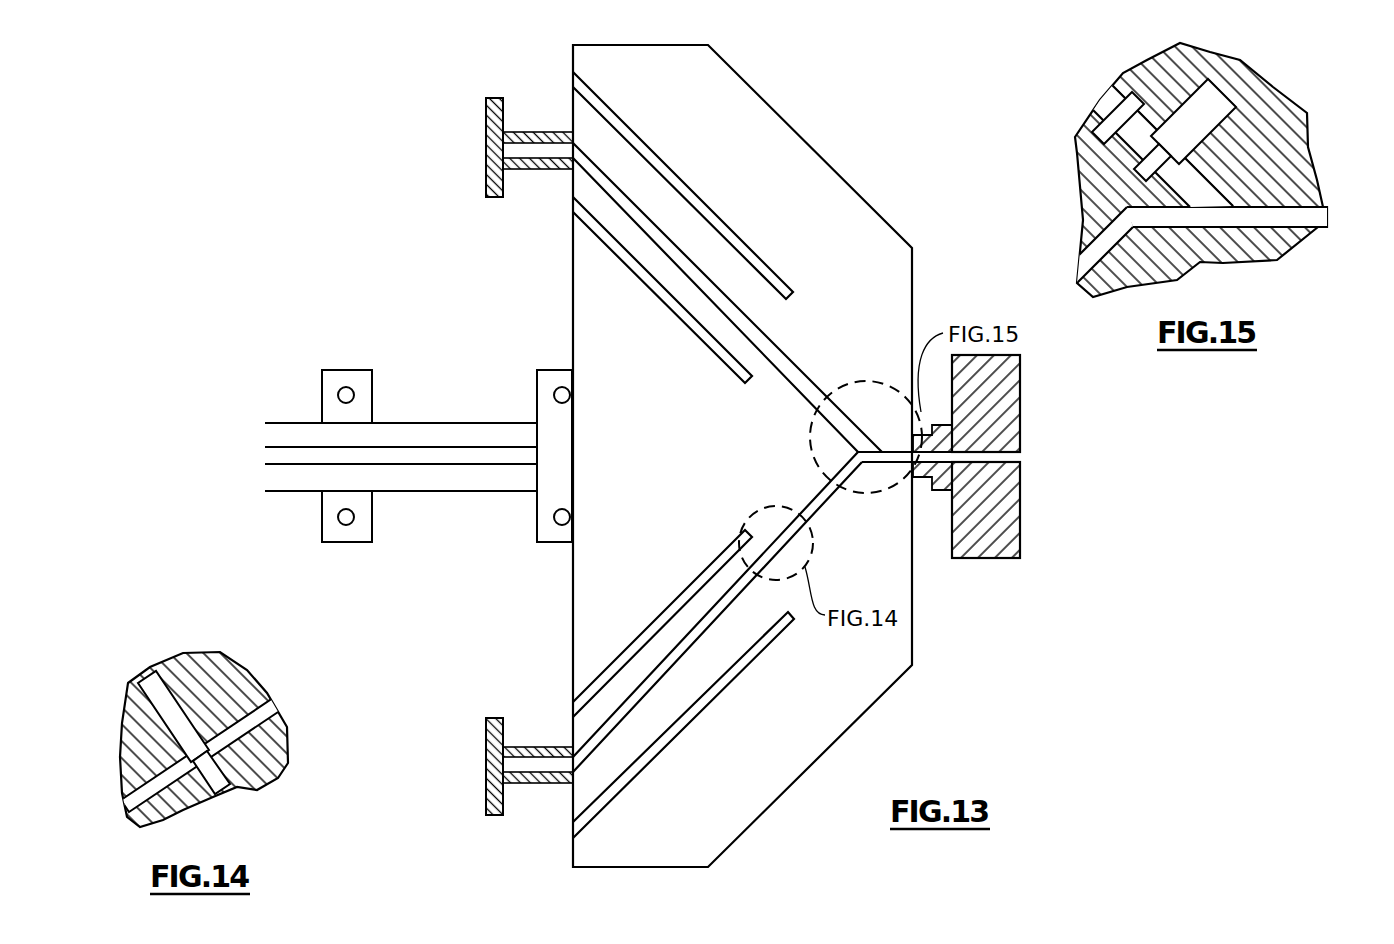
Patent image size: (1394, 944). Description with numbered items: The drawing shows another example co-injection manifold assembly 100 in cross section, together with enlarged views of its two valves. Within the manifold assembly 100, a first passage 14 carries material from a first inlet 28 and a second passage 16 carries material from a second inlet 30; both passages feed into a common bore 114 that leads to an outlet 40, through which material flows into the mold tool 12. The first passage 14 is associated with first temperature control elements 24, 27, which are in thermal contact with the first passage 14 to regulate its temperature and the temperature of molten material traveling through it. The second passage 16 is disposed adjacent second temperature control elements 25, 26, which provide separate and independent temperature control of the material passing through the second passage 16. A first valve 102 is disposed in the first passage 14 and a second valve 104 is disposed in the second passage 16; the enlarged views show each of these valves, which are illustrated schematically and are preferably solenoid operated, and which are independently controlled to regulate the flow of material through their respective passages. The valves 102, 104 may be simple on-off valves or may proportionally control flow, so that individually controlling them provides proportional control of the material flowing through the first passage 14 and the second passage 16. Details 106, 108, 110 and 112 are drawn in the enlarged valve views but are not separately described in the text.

In FIG. 13, the manifold assembly 100 is at (768, 770).
In FIG. 13, the mold tool 12 is at (1005, 540).
In FIG. 13, the first passage 14 is at (807, 500).
In FIG. 13, the second passage 16 is at (780, 353).
In FIG. 13, the first temperature control element 24 is at (743, 665).
In FIG. 13, the second temperature control element 25 is at (670, 307).
In FIG. 13, the second temperature control element 26 is at (712, 222).
In FIG. 13, the first temperature control element 27 is at (600, 680).
In FIG. 13, the first inlet 28 is at (490, 770).
In FIG. 13, the second inlet 30 is at (490, 150).
In FIG. 13, the outlet 40 is at (957, 456).
In FIG. 13, the first valve 102 is at (765, 524).
In FIG. 14, the first valve 102 is at (169, 740).
In FIG. 13, the second valve 104 is at (876, 424).
In FIG. 15, the second valve 104 is at (1203, 162).
In FIG. 14, the pin 106 is at (222, 760).
In FIG. 14, the pin 108 is at (163, 702).
In FIG. 15, the pin 110 is at (1203, 87).
In FIG. 15, the pin 112 is at (1140, 153).
In FIG. 13, the common bore 114 is at (900, 462).
In FIG. 15, the common bore 114 is at (1280, 217).